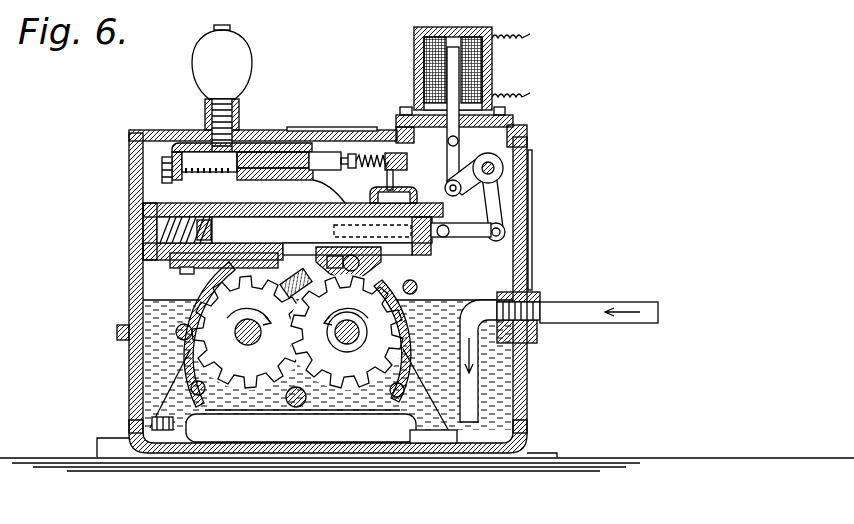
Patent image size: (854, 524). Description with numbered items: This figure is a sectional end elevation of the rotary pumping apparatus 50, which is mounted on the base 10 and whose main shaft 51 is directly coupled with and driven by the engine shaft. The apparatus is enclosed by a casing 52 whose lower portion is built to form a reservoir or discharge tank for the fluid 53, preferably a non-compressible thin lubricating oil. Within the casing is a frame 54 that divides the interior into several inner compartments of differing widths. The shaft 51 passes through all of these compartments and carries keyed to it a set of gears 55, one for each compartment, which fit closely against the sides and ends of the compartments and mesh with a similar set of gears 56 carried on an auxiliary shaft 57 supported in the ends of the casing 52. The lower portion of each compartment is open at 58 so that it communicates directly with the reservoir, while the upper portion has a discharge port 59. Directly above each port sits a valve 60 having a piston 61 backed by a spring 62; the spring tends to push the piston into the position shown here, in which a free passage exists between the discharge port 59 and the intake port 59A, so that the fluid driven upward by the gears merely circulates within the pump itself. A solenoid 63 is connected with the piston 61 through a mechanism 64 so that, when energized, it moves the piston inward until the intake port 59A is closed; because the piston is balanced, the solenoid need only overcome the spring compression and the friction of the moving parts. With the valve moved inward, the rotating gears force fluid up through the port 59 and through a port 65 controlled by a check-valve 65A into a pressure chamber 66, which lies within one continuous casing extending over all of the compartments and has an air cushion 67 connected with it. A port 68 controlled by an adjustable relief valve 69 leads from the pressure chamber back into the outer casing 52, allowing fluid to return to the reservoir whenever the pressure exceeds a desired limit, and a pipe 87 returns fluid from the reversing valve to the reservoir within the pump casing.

The base 10 is at (575, 467).
The pumping apparatus 50 is at (534, 129).
The main shaft 51 is at (352, 345).
The casing 52 is at (155, 272).
The fluid 53 is at (481, 291).
The frame 54 is at (192, 353).
The gears 55 is at (371, 305).
The gears 56 is at (177, 318).
The auxiliary shaft 57 is at (260, 348).
The opening 58 is at (258, 405).
The discharge port 59 is at (292, 253).
The intake port 59A is at (399, 253).
The valve 60 is at (330, 202).
The piston 61 is at (262, 235).
The spring 62 is at (134, 223).
The solenoid 63 is at (430, 66).
The mechanism 64 is at (490, 213).
The port 65 is at (230, 194).
The check-valve 65A is at (228, 165).
The pressure chamber 66 is at (241, 150).
The air cushion 67 is at (213, 70).
The port 68 is at (303, 160).
The relief valve 69 is at (327, 160).
The pipe 87 is at (590, 310).